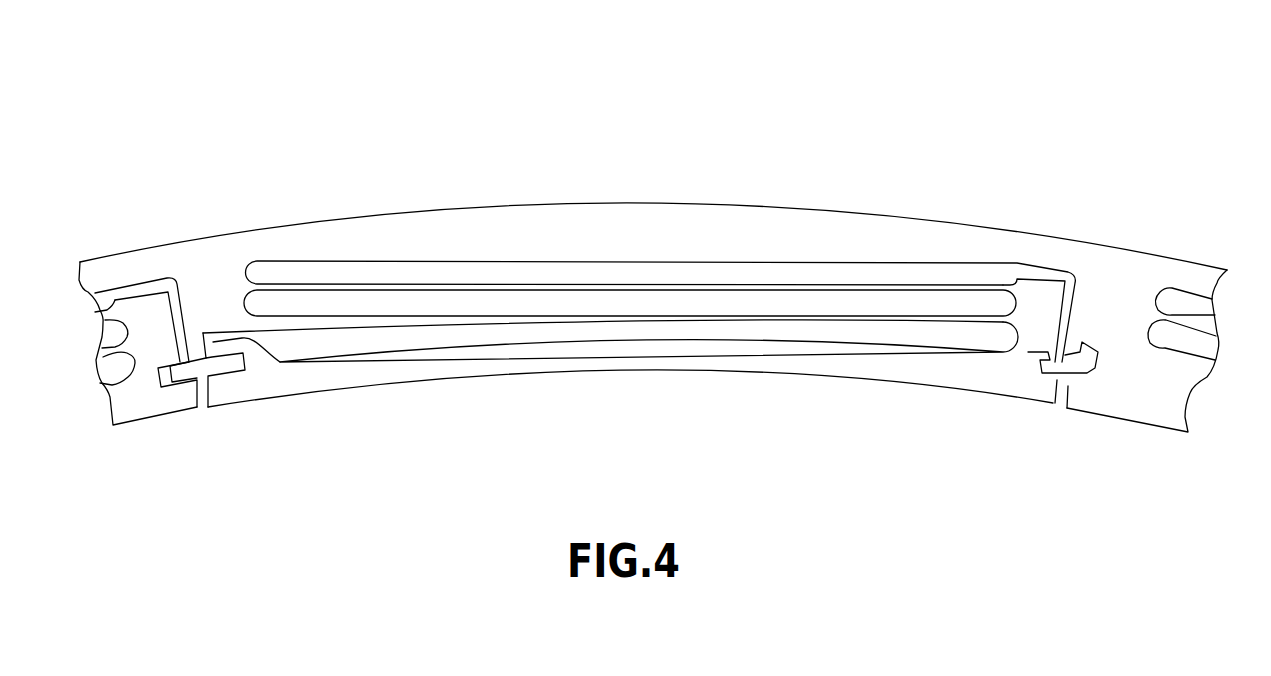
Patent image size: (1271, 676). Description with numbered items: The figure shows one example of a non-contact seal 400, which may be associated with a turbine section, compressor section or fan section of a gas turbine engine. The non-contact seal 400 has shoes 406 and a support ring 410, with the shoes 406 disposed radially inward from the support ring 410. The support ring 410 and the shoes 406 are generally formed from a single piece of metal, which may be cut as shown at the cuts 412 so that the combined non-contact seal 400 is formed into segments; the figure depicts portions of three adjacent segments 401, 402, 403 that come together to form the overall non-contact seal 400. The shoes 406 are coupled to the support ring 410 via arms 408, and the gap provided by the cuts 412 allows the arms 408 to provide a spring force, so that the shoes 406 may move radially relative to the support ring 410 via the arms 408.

The non-contact seal 400 is at (924, 113).
The segment 401 is at (181, 396).
The segment 402 is at (548, 355).
The segment 403 is at (1160, 417).
The shoes 406 is at (865, 370).
The arms 408 is at (592, 315).
The support ring 410 is at (211, 255).
The cuts 412 is at (394, 323).